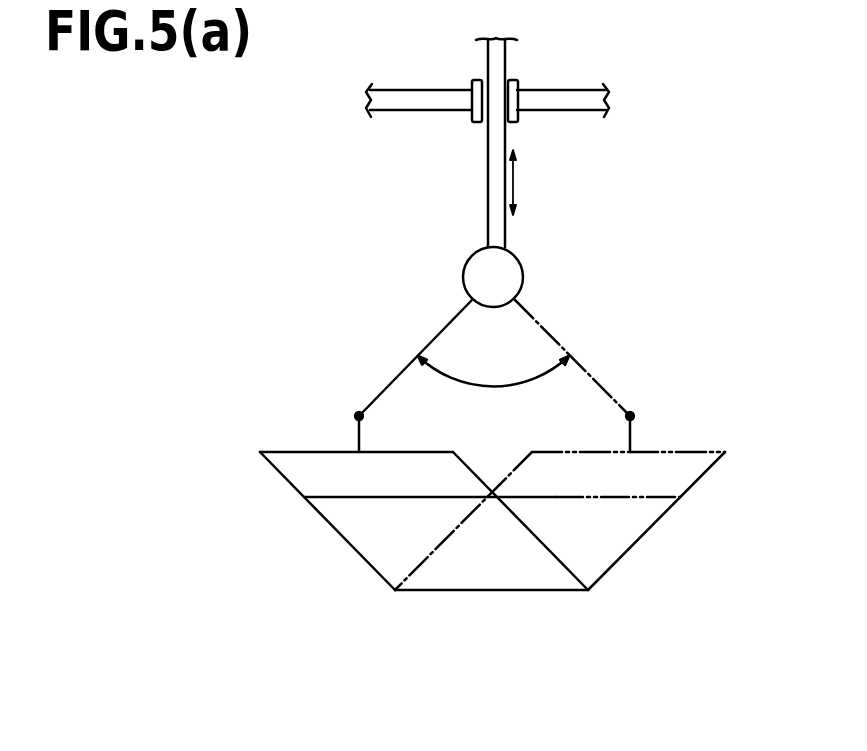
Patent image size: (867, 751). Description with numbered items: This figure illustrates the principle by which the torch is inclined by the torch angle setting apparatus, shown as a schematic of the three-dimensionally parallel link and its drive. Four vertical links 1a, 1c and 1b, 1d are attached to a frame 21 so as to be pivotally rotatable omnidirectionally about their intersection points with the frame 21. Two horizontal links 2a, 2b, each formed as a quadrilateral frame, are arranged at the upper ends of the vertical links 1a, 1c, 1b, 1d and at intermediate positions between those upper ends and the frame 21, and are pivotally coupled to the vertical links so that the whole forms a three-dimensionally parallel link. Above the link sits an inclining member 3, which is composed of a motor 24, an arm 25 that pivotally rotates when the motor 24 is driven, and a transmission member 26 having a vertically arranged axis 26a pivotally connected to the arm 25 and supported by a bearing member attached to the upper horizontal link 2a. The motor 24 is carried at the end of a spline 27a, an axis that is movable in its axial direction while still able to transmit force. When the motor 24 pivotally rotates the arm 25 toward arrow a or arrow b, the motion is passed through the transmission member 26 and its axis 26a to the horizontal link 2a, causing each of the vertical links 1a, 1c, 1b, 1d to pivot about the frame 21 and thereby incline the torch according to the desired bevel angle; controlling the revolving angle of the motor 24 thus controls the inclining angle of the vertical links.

The spline 27a is at (487, 180).
The motor 24 is at (523, 272).
The inclining member 3 is at (446, 272).
The arm 25 is at (385, 385).
The transmission member 26 is at (328, 416).
The axis 26a is at (360, 437).
The horizontal link 2a is at (443, 452).
The horizontal link 2b is at (330, 497).
The vertical link 1a is at (385, 521).
The vertical link 1c is at (347, 543).
The vertical link 1b is at (603, 521).
The vertical link 1d is at (563, 560).
The frame 21 is at (470, 590).